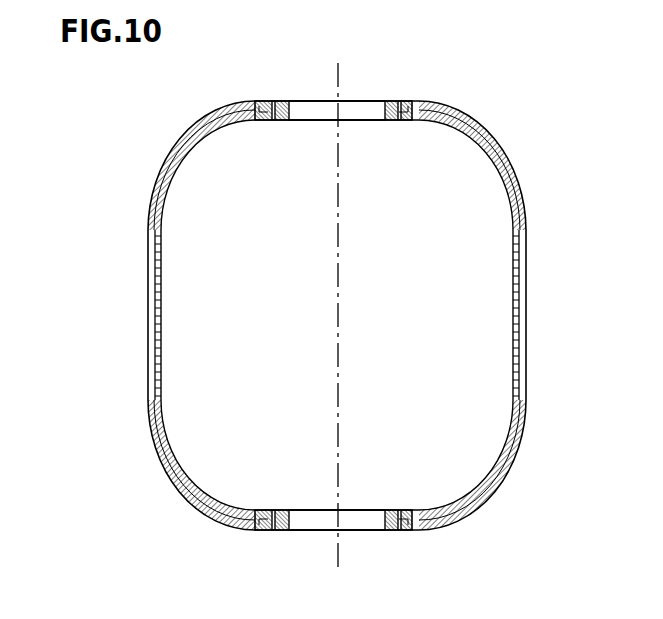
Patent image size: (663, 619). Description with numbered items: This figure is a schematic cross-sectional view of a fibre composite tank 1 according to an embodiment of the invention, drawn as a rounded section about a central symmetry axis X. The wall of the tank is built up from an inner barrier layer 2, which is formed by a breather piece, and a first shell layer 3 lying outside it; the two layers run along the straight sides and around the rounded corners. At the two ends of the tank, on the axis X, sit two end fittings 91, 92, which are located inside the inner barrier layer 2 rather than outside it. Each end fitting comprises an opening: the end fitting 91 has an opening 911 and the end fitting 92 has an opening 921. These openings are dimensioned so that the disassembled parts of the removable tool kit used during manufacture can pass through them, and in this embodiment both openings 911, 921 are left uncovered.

The fibre composite tank 1 is at (152, 493).
The inner barrier layer 2 is at (162, 308).
The first shell layer 3 is at (150, 425).
The end fitting 91 is at (433, 508).
The opening 911 is at (308, 518).
The end fitting 92 is at (442, 122).
The opening 921 is at (310, 116).
The symmetry axis X is at (341, 363).